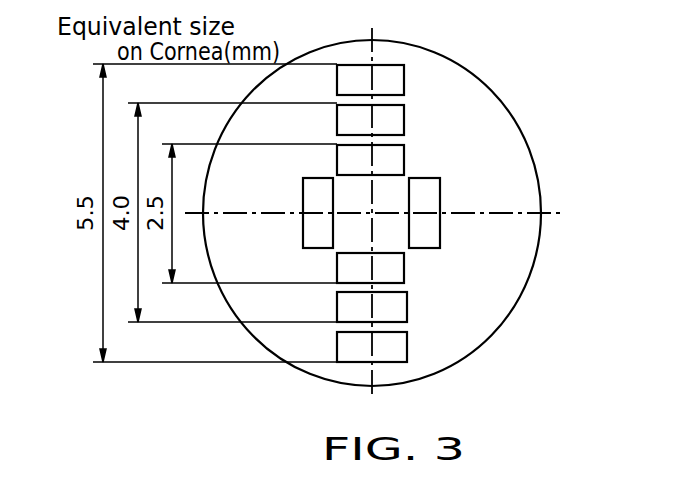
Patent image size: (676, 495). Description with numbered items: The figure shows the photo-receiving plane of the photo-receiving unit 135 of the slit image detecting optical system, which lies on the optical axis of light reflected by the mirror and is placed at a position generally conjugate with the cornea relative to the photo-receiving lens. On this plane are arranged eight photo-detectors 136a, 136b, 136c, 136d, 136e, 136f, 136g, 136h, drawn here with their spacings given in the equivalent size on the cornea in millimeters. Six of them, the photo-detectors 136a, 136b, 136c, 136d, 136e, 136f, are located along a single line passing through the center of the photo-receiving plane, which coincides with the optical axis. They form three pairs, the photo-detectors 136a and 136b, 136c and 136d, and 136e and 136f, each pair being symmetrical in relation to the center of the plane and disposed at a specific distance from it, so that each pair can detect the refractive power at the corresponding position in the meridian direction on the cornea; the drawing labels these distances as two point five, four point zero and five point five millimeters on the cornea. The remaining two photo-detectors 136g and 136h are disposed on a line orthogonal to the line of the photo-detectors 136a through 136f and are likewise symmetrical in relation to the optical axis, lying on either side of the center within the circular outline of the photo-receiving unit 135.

The photo-receiving unit 135 is at (539, 249).
The photo-detector 136a is at (392, 165).
The photo-detector 136b is at (350, 262).
The photo-detector 136c is at (392, 125).
The photo-detector 136d is at (353, 300).
The photo-detector 136e is at (392, 86).
The photo-detector 136f is at (353, 339).
The photo-detector 136g is at (312, 193).
The photo-detector 136h is at (425, 238).